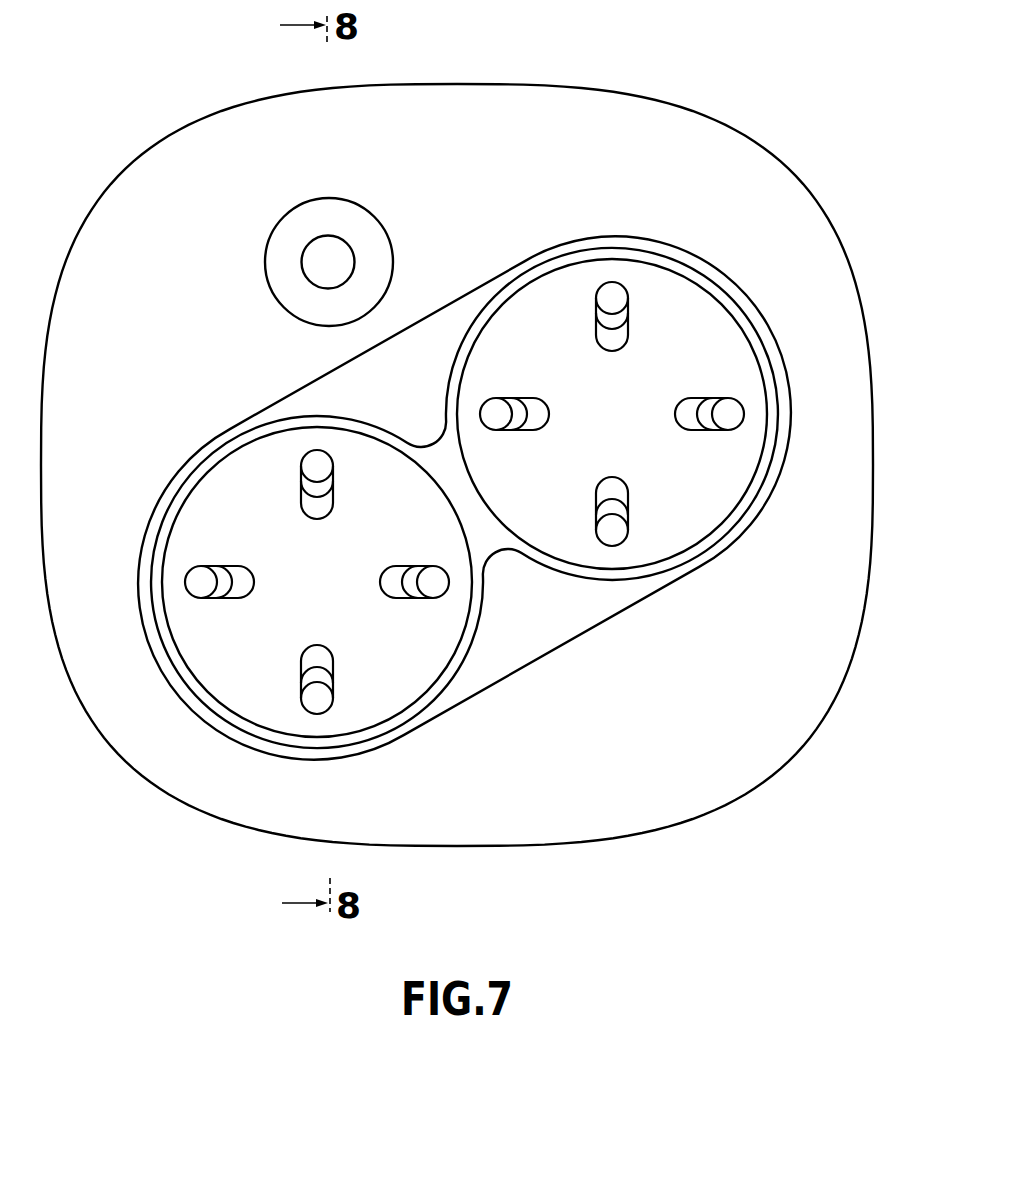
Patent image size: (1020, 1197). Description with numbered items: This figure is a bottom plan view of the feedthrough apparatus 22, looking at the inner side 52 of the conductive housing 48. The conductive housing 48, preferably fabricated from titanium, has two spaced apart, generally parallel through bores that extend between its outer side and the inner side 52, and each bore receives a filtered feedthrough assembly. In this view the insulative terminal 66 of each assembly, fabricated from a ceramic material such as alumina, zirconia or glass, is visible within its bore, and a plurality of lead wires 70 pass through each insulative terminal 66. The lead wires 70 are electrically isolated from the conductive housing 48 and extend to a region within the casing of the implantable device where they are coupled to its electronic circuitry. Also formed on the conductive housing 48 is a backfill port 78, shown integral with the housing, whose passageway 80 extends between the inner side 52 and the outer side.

The feedthrough apparatus 22 is at (478, 457).
The conductive housing 48 is at (478, 465).
The inner side 52 is at (815, 677).
The insulative terminal 66 is at (432, 642).
The lead wires 70 is at (617, 302).
The backfill port 78 is at (290, 290).
The passageway 80 is at (347, 267).